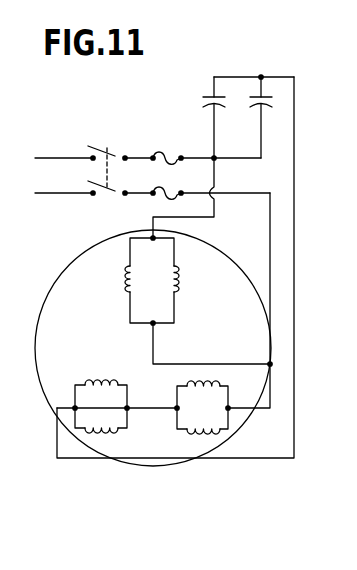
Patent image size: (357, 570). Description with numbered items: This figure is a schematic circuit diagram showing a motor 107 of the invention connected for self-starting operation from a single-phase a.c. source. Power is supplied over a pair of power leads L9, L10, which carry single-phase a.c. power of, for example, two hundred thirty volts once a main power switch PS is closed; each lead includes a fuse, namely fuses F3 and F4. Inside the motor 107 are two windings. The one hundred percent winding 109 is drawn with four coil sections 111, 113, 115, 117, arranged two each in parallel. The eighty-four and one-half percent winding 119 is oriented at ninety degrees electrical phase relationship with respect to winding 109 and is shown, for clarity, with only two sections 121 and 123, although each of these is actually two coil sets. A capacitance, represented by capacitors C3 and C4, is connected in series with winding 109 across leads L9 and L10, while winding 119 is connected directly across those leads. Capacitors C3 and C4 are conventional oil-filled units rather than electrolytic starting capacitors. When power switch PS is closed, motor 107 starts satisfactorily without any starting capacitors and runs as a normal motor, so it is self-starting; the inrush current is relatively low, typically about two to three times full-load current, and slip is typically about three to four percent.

The power lead L9 is at (71, 157).
The power lead L10 is at (68, 194).
The main power switch PS is at (117, 153).
The fuse F3 is at (168, 156).
The fuse F4 is at (167, 192).
The capacitor C3 is at (206, 102).
The capacitor C4 is at (268, 104).
The motor 107 is at (253, 273).
The 100 percent winding 109 is at (168, 446).
The coil section 111 is at (105, 433).
The coil section 113 is at (102, 383).
The coil section 115 is at (208, 436).
The coil section 117 is at (197, 387).
The 84.5 percent winding 119 is at (163, 279).
The winding section 121 is at (127, 286).
The winding section 123 is at (179, 291).